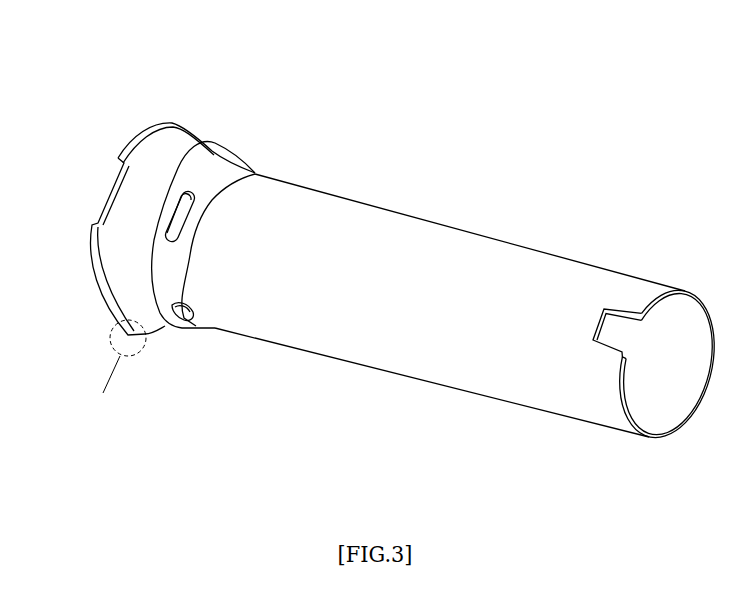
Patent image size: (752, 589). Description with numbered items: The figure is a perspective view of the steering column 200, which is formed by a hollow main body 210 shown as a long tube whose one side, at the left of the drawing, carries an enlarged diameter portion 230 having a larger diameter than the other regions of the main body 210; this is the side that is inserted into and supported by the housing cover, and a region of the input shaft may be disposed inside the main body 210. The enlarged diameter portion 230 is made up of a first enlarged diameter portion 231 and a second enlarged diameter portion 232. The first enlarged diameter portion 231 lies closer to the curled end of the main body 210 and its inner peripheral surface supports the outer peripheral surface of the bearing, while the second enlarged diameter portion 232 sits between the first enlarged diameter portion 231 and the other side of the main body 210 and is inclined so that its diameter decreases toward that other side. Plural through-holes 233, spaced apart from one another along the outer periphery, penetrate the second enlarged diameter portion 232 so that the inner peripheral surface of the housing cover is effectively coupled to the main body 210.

The steering column 200 is at (553, 57).
The main body 210 is at (367, 233).
The enlarged diameter portion 230 is at (295, 56).
The first enlarged diameter portion 231 is at (179, 158).
The second enlarged diameter portion 232 is at (226, 167).
The through-holes 233 is at (188, 218).